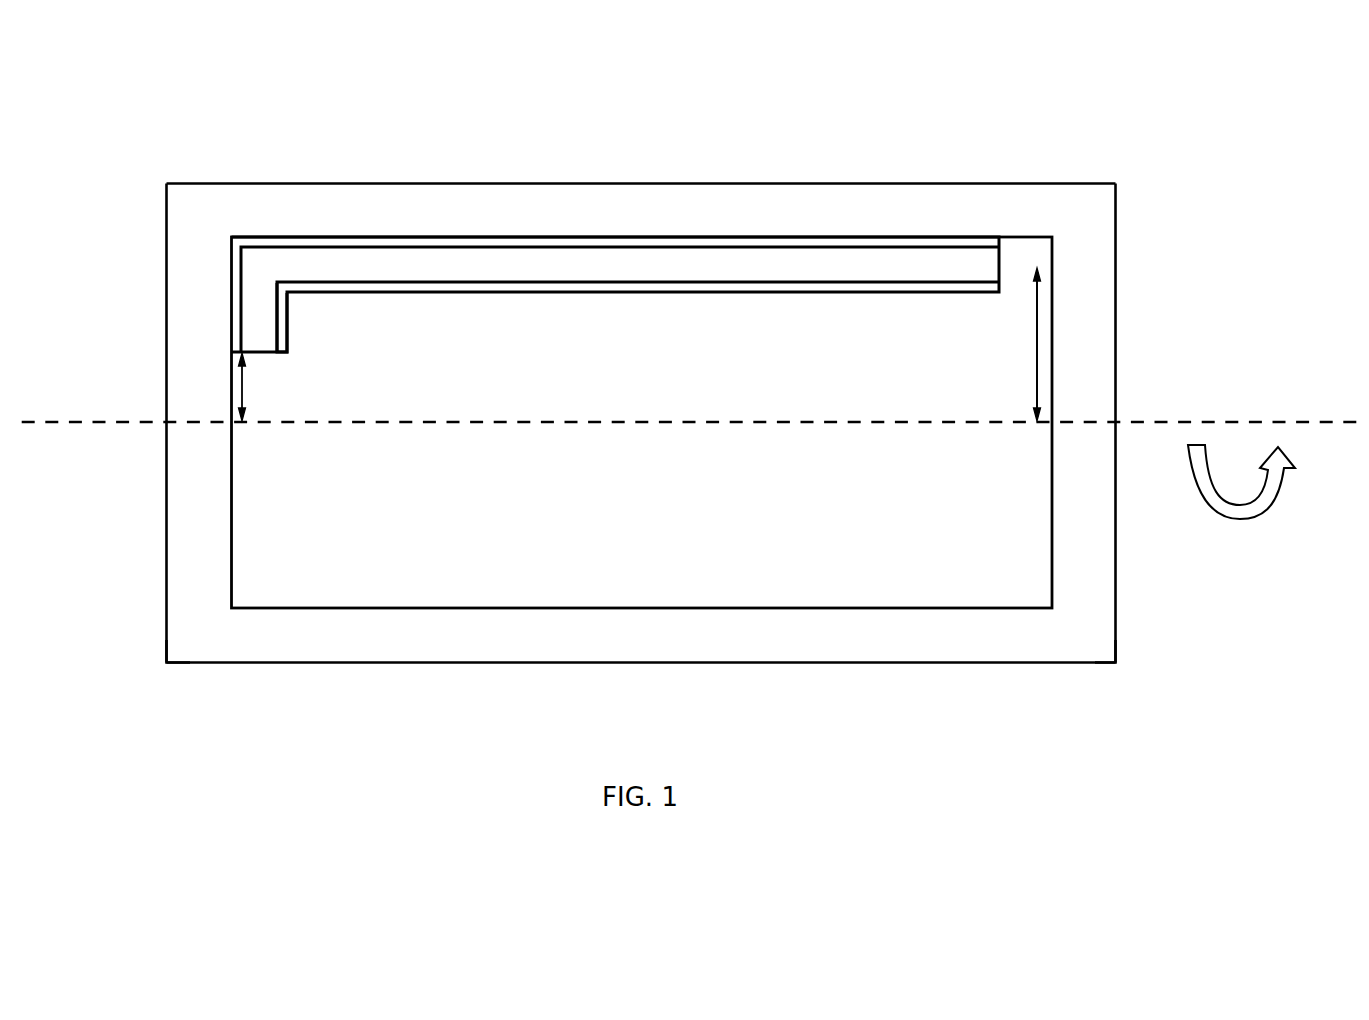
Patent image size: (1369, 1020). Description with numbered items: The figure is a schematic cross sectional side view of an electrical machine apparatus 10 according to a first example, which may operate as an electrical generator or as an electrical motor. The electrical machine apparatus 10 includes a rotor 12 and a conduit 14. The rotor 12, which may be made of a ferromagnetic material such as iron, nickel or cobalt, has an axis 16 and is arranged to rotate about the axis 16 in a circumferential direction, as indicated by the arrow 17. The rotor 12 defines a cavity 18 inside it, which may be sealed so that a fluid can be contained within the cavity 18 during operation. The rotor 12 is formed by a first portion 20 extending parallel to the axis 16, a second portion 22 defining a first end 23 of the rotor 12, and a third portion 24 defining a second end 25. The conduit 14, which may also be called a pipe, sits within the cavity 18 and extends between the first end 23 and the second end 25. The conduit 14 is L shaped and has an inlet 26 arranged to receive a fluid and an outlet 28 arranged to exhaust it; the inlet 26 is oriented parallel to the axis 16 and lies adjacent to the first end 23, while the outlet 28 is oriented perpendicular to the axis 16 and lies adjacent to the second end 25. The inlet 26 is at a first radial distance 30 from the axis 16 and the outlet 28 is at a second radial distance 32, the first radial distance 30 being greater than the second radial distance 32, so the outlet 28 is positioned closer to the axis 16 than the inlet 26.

The electrical machine apparatus 10 is at (204, 134).
The rotor 12 is at (587, 630).
The conduit 14 is at (628, 311).
The axis 16 is at (1323, 422).
The arrow 17 is at (1240, 517).
The cavity 18 is at (625, 520).
The first portion 20 is at (723, 203).
The second portion 22 is at (1096, 307).
The first end 23 is at (1073, 686).
The third portion 24 is at (195, 258).
The second end 25 is at (177, 707).
The inlet 26 is at (1008, 300).
The outlet 28 is at (265, 364).
The first radial distance 30 is at (1037, 338).
The second radial distance 32 is at (238, 387).